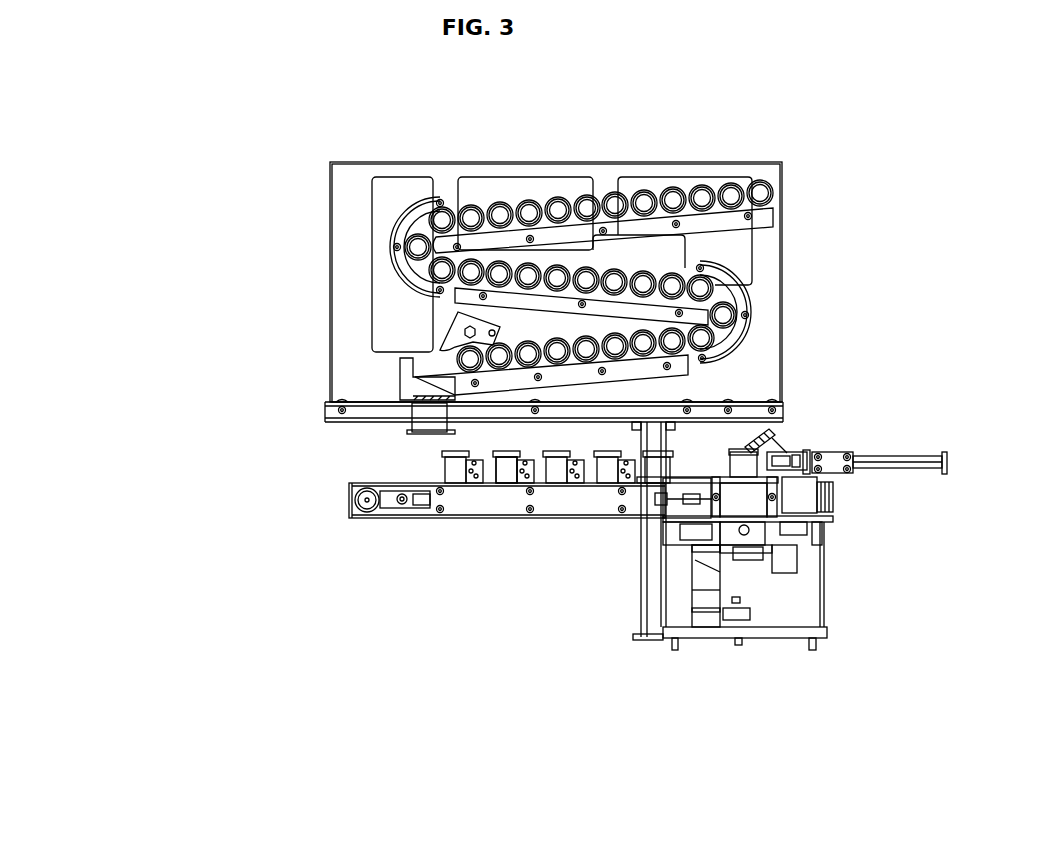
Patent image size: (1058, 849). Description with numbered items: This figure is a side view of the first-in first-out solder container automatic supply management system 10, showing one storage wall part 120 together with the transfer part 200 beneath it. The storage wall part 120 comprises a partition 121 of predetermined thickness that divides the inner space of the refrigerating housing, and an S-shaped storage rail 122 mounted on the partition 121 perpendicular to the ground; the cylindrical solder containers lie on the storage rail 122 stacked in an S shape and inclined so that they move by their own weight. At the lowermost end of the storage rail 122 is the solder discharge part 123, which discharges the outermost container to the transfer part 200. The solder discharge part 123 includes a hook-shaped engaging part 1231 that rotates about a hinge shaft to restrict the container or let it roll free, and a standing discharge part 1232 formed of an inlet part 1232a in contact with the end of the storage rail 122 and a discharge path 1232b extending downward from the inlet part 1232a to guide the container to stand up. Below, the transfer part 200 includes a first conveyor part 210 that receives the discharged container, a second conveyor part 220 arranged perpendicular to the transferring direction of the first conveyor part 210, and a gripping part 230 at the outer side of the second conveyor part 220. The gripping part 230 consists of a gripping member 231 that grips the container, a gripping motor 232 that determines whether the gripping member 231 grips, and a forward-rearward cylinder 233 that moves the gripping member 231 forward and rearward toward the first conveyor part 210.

The first-in first-out solder container automatic supply management system 10 is at (53, 97).
The storage wall part 120 is at (110, 378).
The partition 121 is at (336, 190).
The storage rail 122 is at (393, 262).
The solder discharge part 123 is at (170, 310).
The engaging part 1231 is at (460, 342).
The standing discharge part 1232 is at (240, 375).
The inlet part 1232a is at (402, 392).
The discharge path 1232b is at (413, 442).
The transfer part 200 is at (575, 748).
The first conveyor part 210 is at (600, 505).
The second conveyor part 220 is at (742, 503).
The gripping part 230 is at (925, 703).
The gripping member 231 is at (790, 455).
The gripping motor 232 is at (833, 502).
The forward-rearward cylinder 233 is at (905, 462).